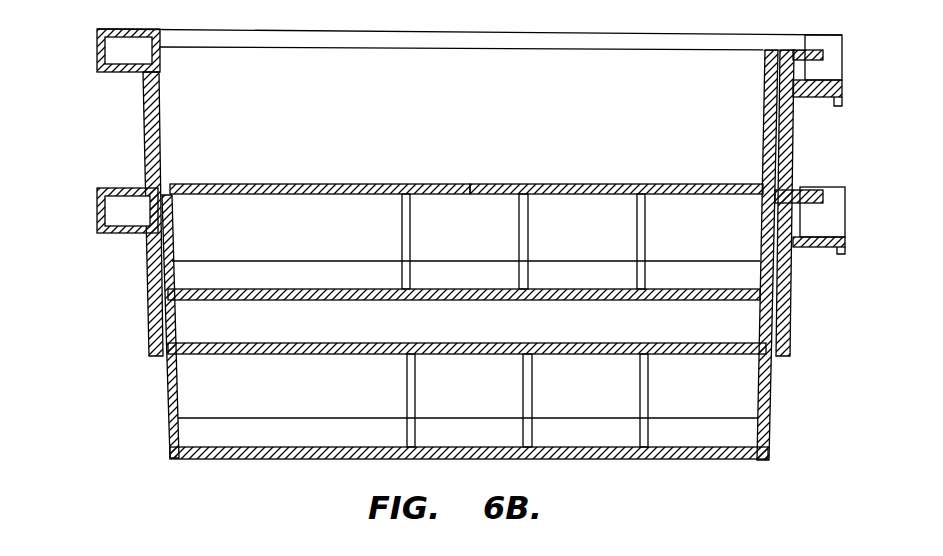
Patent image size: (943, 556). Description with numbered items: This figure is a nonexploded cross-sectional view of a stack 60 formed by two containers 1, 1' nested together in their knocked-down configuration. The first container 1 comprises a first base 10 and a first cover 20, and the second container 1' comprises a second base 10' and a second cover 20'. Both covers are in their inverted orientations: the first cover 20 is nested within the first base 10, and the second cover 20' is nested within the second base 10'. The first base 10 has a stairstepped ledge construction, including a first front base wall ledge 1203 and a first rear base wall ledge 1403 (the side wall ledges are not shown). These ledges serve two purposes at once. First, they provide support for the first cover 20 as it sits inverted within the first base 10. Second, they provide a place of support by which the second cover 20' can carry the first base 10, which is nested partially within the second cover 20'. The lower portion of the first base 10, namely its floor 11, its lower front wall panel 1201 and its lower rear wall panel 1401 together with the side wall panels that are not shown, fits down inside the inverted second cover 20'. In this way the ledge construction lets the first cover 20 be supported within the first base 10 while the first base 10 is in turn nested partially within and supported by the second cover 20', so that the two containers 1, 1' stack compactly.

The stack 60 is at (67, 12).
The first container 1 is at (825, 195).
The second container 1' is at (520, 255).
The first base 10 is at (460, 100).
The second base 10' is at (135, 323).
The first cover 20 is at (184, 211).
The second cover 20' is at (467, 333).
The floor 11 is at (432, 287).
The first rear base wall ledge 1403 is at (170, 188).
The first front base wall ledge 1203 is at (768, 184).
The lower rear wall panel 1401 is at (170, 250).
The lower front wall panel 1201 is at (760, 231).